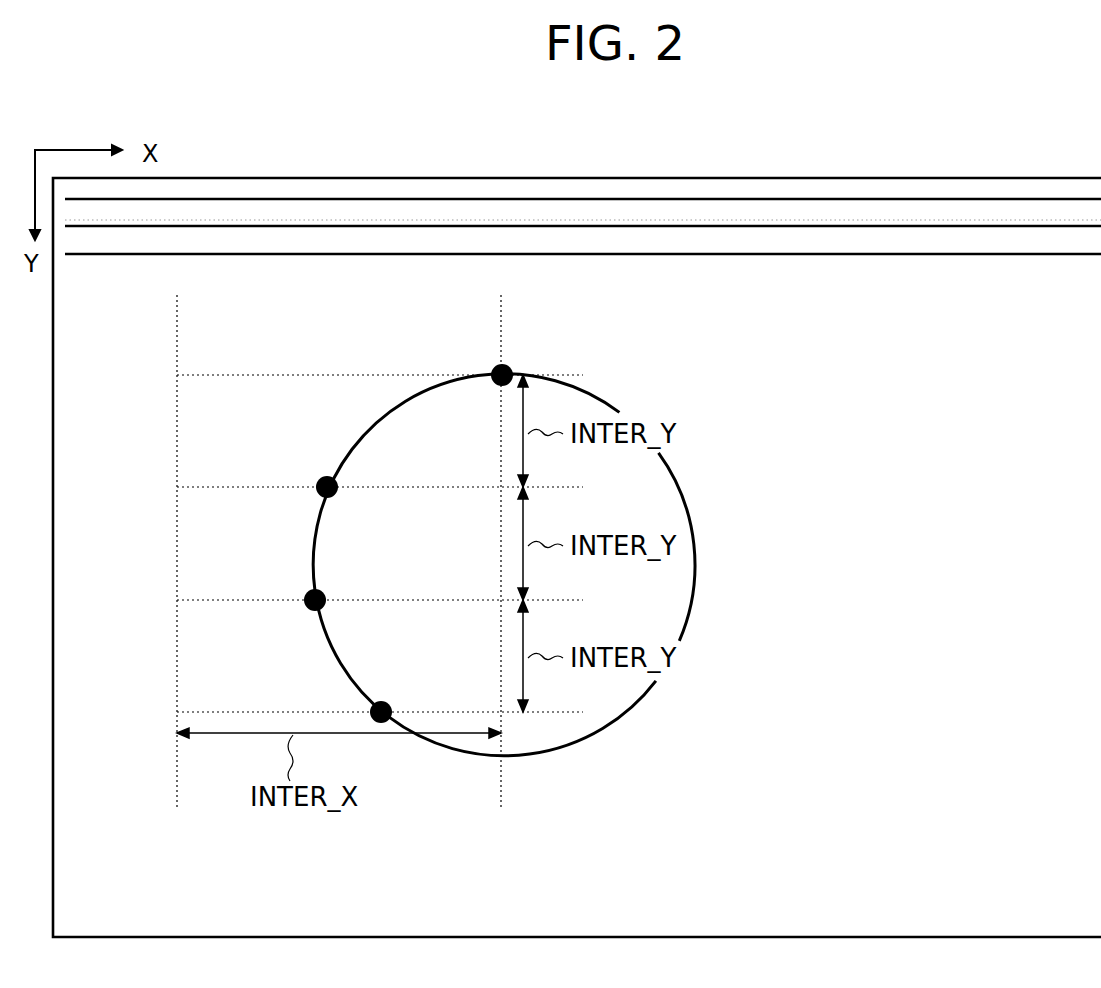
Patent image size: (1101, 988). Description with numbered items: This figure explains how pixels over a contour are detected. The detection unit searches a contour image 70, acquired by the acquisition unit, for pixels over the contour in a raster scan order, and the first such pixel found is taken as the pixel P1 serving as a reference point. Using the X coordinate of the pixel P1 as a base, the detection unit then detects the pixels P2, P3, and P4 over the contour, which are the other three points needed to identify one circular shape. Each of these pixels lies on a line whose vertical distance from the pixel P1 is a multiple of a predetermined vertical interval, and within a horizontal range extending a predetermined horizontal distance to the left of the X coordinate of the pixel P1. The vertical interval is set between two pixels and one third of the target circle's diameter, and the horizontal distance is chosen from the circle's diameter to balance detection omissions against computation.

The contour image 70 is at (1062, 174).
The pixel serving as a reference point P1 is at (486, 366).
The pixel over the contour P2 is at (311, 477).
The pixel over the contour P3 is at (297, 590).
The pixel over the contour P4 is at (386, 696).